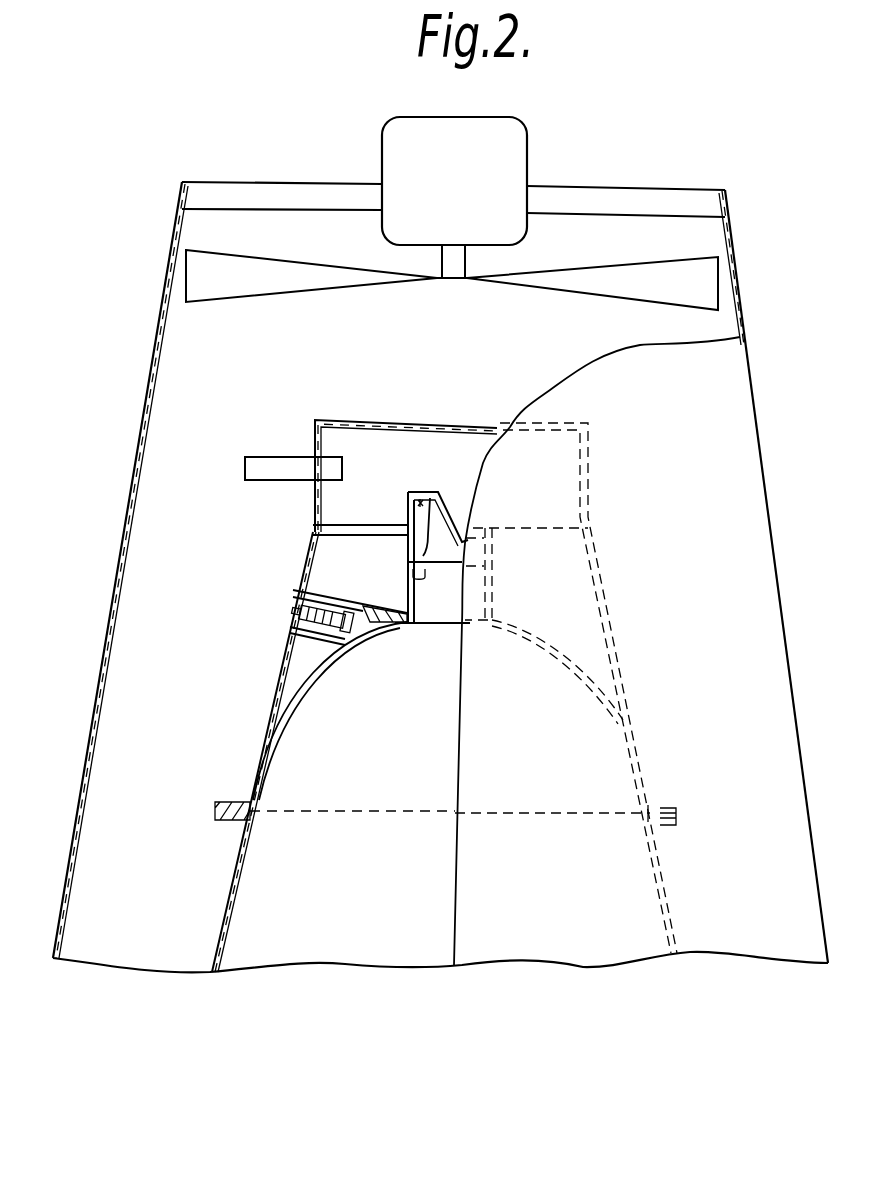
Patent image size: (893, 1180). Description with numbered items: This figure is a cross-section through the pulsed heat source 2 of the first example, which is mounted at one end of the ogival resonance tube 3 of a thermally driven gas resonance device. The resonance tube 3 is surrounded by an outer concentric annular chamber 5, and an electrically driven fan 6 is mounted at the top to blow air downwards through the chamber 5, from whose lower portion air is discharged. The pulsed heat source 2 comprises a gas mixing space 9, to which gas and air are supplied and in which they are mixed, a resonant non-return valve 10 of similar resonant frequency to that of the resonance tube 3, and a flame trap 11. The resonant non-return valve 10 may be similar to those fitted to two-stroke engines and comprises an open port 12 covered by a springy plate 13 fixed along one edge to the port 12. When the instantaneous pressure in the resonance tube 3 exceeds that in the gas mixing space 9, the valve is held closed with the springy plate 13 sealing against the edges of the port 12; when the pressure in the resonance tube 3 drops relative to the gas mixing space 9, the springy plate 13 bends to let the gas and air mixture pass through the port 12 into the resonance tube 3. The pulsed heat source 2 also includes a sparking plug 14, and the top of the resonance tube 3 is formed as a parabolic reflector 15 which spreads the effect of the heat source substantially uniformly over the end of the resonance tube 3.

The pulsed heat source 2 is at (297, 440).
The resonance tube 3 is at (223, 937).
The outer concentric annular chamber 5 is at (95, 843).
The electrically driven fan 6 is at (705, 288).
The gas mixing space 9 is at (375, 435).
The resonant non-return valve 10 is at (438, 482).
The flame trap 11 is at (418, 575).
The open port 12 is at (453, 537).
The springy plate 13 is at (420, 508).
The sparking plug 14 is at (308, 608).
The parabolic reflector 15 is at (290, 692).